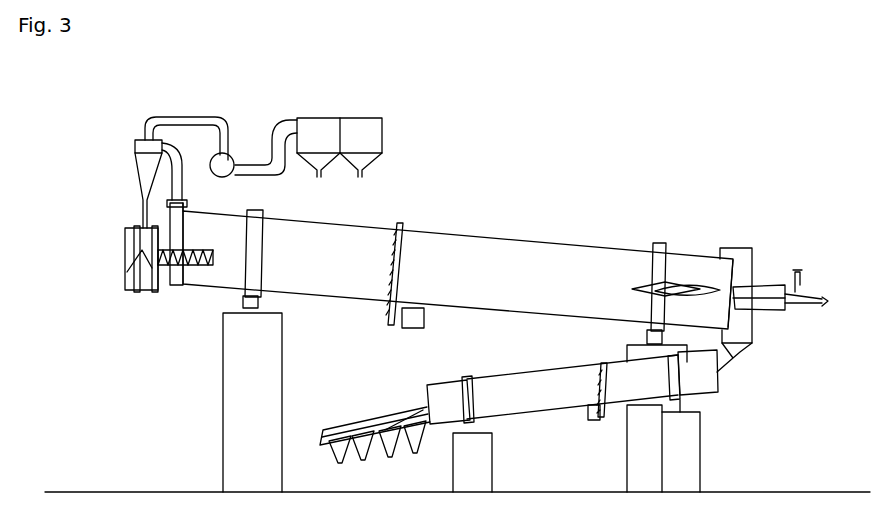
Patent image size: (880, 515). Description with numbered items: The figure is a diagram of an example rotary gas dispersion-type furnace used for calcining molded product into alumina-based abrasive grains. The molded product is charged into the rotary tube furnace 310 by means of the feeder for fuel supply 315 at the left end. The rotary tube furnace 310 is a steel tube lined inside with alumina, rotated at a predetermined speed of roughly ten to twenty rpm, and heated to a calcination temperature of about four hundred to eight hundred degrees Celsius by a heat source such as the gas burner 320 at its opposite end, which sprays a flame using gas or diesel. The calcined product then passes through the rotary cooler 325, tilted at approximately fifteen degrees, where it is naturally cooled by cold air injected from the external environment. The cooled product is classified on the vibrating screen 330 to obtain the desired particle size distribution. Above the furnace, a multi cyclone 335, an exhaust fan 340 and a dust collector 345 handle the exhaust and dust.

The rotary tube furnace 310 is at (500, 238).
The feeder for fuel supply 315 is at (125, 252).
The gas burner 320 is at (768, 286).
The rotary cooler 325 is at (553, 372).
The vibrating screen 330 is at (360, 427).
The multi cyclone 335 is at (135, 148).
The exhaust fan 340 is at (236, 156).
The dust collector 345 is at (382, 127).